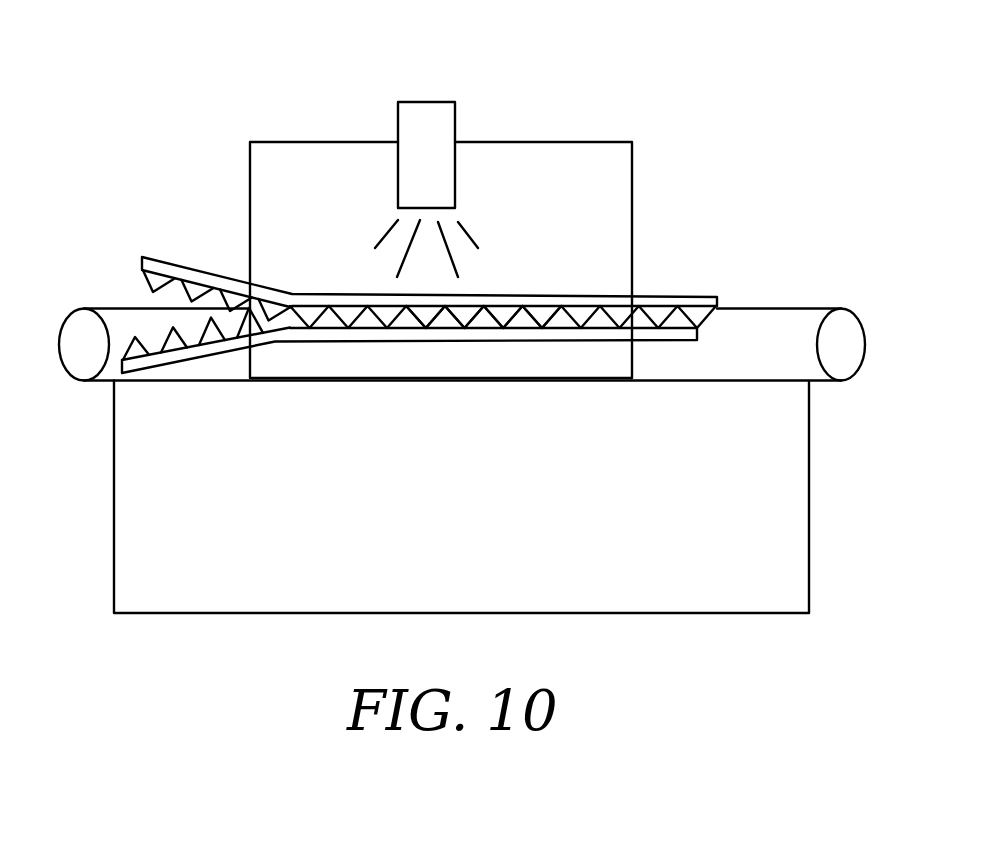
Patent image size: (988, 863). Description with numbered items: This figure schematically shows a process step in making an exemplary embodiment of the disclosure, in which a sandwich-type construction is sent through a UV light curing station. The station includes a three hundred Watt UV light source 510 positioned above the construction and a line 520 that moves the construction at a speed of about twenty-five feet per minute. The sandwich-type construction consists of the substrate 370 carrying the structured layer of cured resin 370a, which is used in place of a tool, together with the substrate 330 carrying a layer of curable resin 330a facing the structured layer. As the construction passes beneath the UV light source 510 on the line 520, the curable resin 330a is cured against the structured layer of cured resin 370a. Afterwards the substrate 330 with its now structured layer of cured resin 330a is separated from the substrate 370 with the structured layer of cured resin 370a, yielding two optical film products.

The UV light source 510 is at (432, 115).
The line 520 is at (112, 363).
The substrate 330 is at (697, 307).
The layer of curable resin 330a is at (655, 317).
The substrate 370 is at (445, 333).
The structured layer of cured resin 370a is at (522, 315).